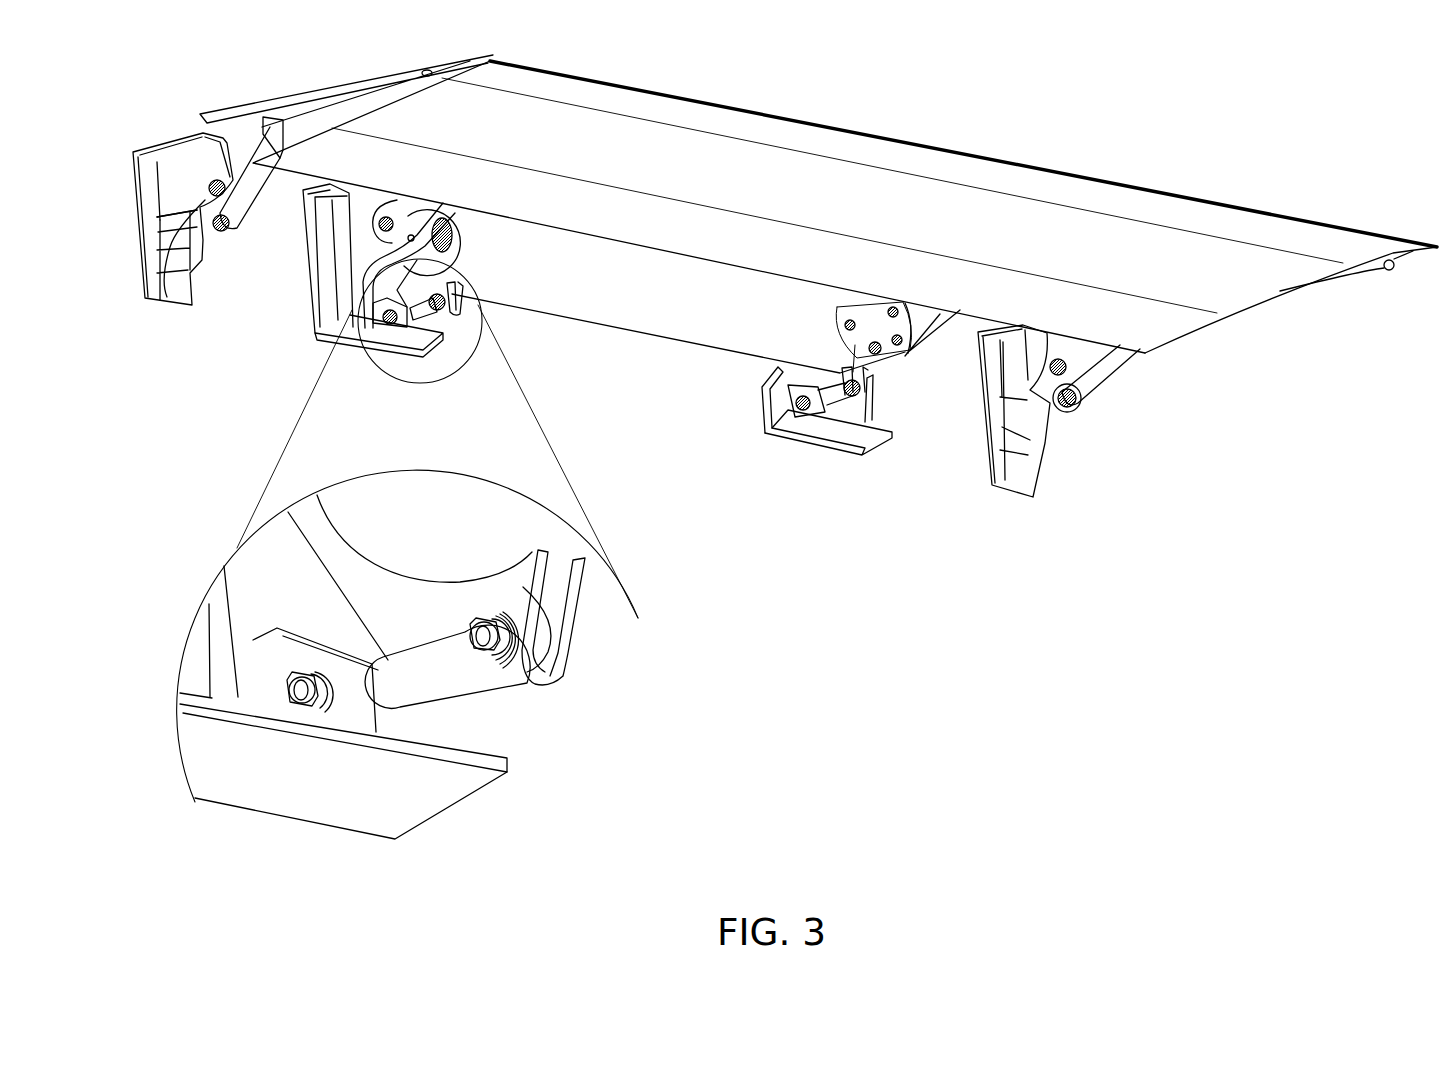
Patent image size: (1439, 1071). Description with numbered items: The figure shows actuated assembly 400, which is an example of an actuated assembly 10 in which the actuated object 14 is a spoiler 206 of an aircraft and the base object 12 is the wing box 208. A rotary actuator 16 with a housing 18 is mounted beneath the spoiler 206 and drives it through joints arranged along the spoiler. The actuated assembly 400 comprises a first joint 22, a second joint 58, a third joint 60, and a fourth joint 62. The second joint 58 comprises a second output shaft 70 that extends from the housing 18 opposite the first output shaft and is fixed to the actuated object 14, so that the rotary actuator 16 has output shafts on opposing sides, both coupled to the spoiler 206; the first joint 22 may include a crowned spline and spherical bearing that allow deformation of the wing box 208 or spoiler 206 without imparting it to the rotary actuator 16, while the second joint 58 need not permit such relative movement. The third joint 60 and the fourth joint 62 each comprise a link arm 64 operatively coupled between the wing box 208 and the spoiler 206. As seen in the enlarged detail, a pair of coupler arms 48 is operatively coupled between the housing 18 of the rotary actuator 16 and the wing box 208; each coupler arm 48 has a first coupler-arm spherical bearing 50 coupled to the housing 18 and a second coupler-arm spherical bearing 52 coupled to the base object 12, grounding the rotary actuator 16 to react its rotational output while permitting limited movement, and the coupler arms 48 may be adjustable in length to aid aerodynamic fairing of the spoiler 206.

The actuated assembly 10 is at (1292, 98).
The base object 12 is at (130, 201).
The actuated object 14 is at (832, 124).
The rotary actuator 16 is at (660, 339).
The housing 18 is at (568, 318).
The first joint 22 is at (287, 252).
The coupler arm 48 is at (430, 707).
The first coupler-arm spherical bearing 50 is at (524, 685).
The second coupler-arm spherical bearing 52 is at (380, 714).
The second joint 58 is at (907, 375).
The third joint 60 is at (188, 117).
The fourth joint 62 is at (1078, 437).
The link arm 64 is at (205, 200).
The second output shaft 70 is at (820, 422).
The spoiler 206 is at (979, 156).
The wing box 208 is at (138, 235).
The actuated assembly 400 is at (1191, 100).